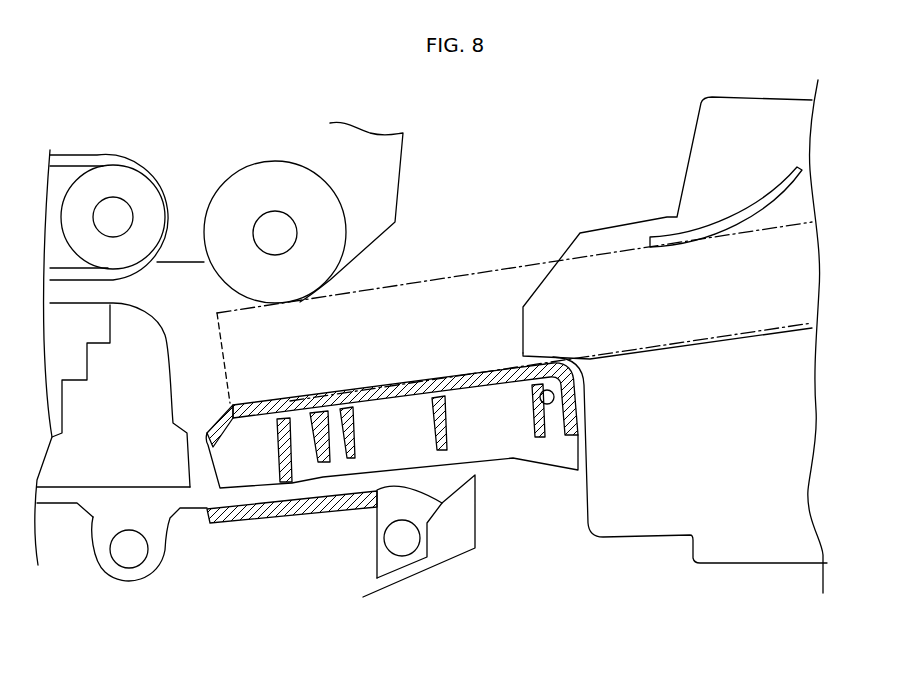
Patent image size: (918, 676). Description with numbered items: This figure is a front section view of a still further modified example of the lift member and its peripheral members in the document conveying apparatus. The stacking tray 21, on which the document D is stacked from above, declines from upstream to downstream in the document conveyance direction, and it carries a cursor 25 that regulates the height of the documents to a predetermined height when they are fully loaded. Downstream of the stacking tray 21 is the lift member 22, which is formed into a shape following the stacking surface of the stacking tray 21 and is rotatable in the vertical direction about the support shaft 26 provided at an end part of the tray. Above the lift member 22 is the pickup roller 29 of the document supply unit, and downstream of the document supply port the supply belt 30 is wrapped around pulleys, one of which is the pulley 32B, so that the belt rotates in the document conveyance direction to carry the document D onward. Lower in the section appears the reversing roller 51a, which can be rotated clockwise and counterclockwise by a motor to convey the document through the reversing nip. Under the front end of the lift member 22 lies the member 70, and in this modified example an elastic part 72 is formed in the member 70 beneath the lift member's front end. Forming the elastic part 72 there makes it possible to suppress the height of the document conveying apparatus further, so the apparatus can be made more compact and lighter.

The stacking tray 21 is at (670, 510).
The lift member 22 is at (510, 472).
The cursor 25 is at (703, 227).
The support shaft 26 is at (549, 404).
The pickup roller 29 is at (277, 170).
The supply belt 30 is at (153, 160).
The pulley 32B is at (117, 177).
The reversing roller 51a is at (153, 528).
The member 70 is at (328, 556).
The elastic part 72 is at (260, 524).
The document D is at (437, 280).